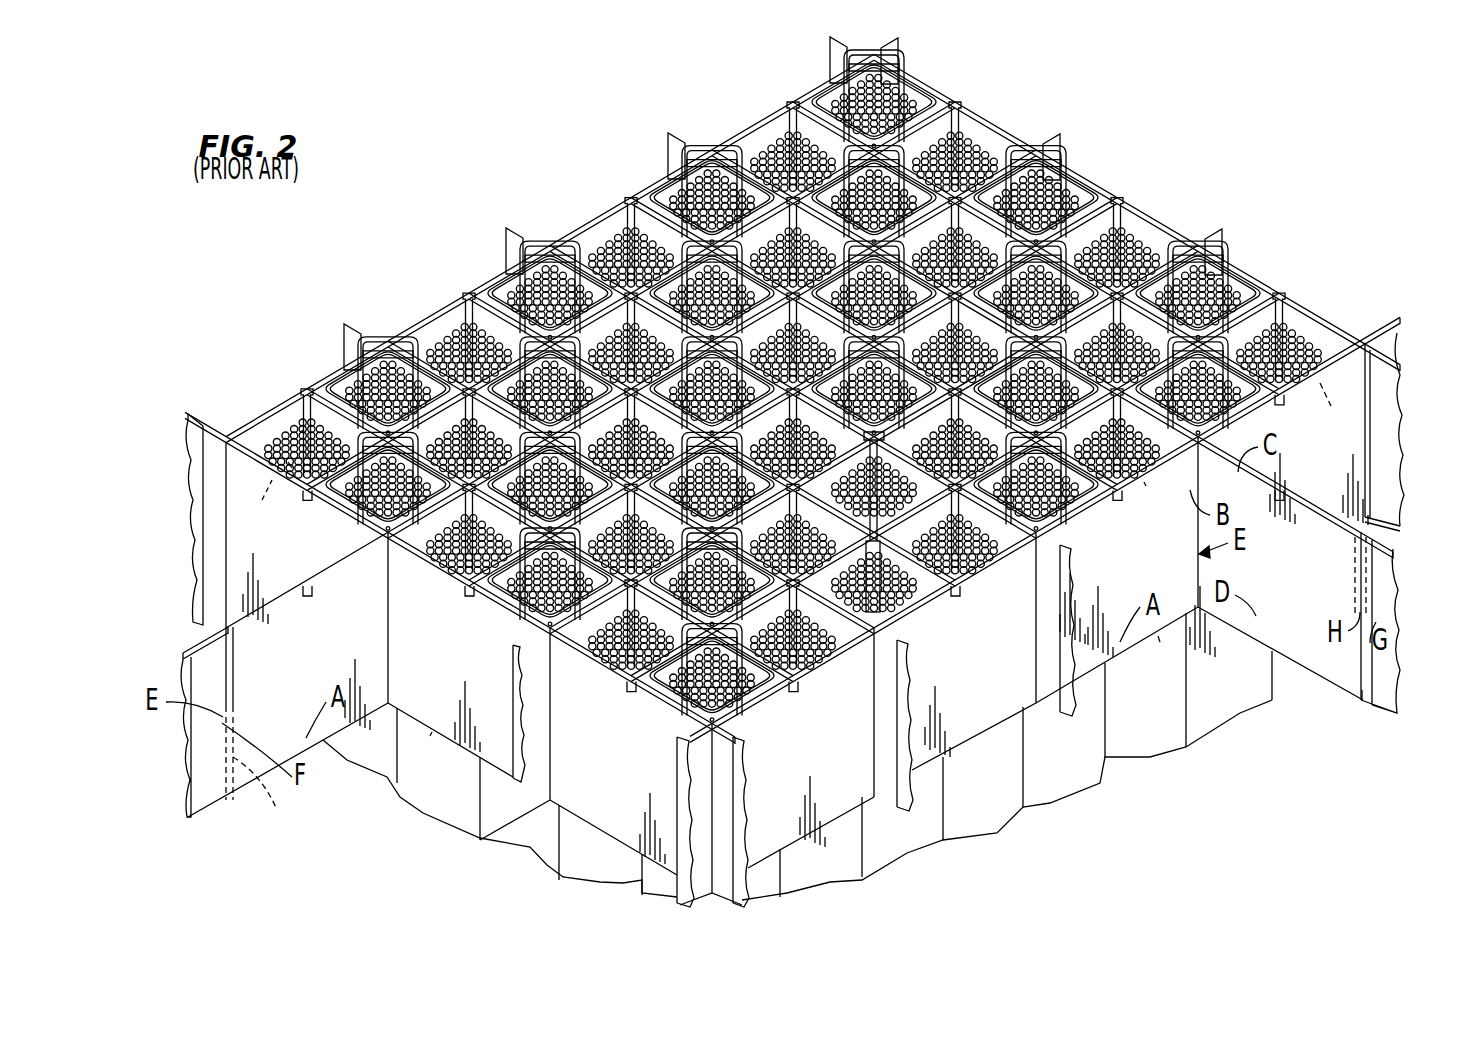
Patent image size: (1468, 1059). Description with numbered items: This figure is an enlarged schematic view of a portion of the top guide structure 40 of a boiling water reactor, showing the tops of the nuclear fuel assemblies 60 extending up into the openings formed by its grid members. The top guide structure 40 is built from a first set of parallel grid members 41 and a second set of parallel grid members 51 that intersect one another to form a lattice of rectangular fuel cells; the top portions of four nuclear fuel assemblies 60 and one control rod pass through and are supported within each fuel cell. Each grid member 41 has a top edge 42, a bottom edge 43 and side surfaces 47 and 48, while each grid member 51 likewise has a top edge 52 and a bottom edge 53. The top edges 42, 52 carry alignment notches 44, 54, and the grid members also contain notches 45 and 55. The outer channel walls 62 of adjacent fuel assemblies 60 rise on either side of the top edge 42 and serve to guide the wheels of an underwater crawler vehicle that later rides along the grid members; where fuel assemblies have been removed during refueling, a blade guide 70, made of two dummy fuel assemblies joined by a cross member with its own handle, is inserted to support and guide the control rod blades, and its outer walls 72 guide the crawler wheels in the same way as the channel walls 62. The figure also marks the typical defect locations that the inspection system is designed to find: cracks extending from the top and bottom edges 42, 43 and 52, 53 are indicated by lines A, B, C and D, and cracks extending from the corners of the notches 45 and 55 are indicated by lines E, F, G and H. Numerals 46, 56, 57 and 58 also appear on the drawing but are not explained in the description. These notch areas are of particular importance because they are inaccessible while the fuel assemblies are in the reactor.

The top guide structure 40 is at (1402, 346).
The grid members 41 is at (197, 606).
The top edge 42 is at (1396, 330).
The bottom edge 43 is at (1160, 642).
The alignment notch 44 is at (1146, 486).
The notch 45 is at (232, 660).
The weld line 46 is at (269, 793).
The side surface 47 is at (203, 546).
The side surface 48 is at (1318, 372).
The grid members 51 is at (746, 822).
The top edge 52 is at (300, 432).
The bottom edge 53 is at (430, 736).
The alignment notch 54 is at (300, 497).
The notch 55 is at (1362, 690).
The weld seam 56 is at (1348, 570).
The flux trap gap plate 57 is at (262, 564).
The wall plate 58 is at (288, 462).
The nuclear fuel assemblies 60 is at (698, 190).
The outer channel walls 62 is at (458, 566).
The blade guide 70 is at (902, 586).
The outer walls 72 is at (890, 600).